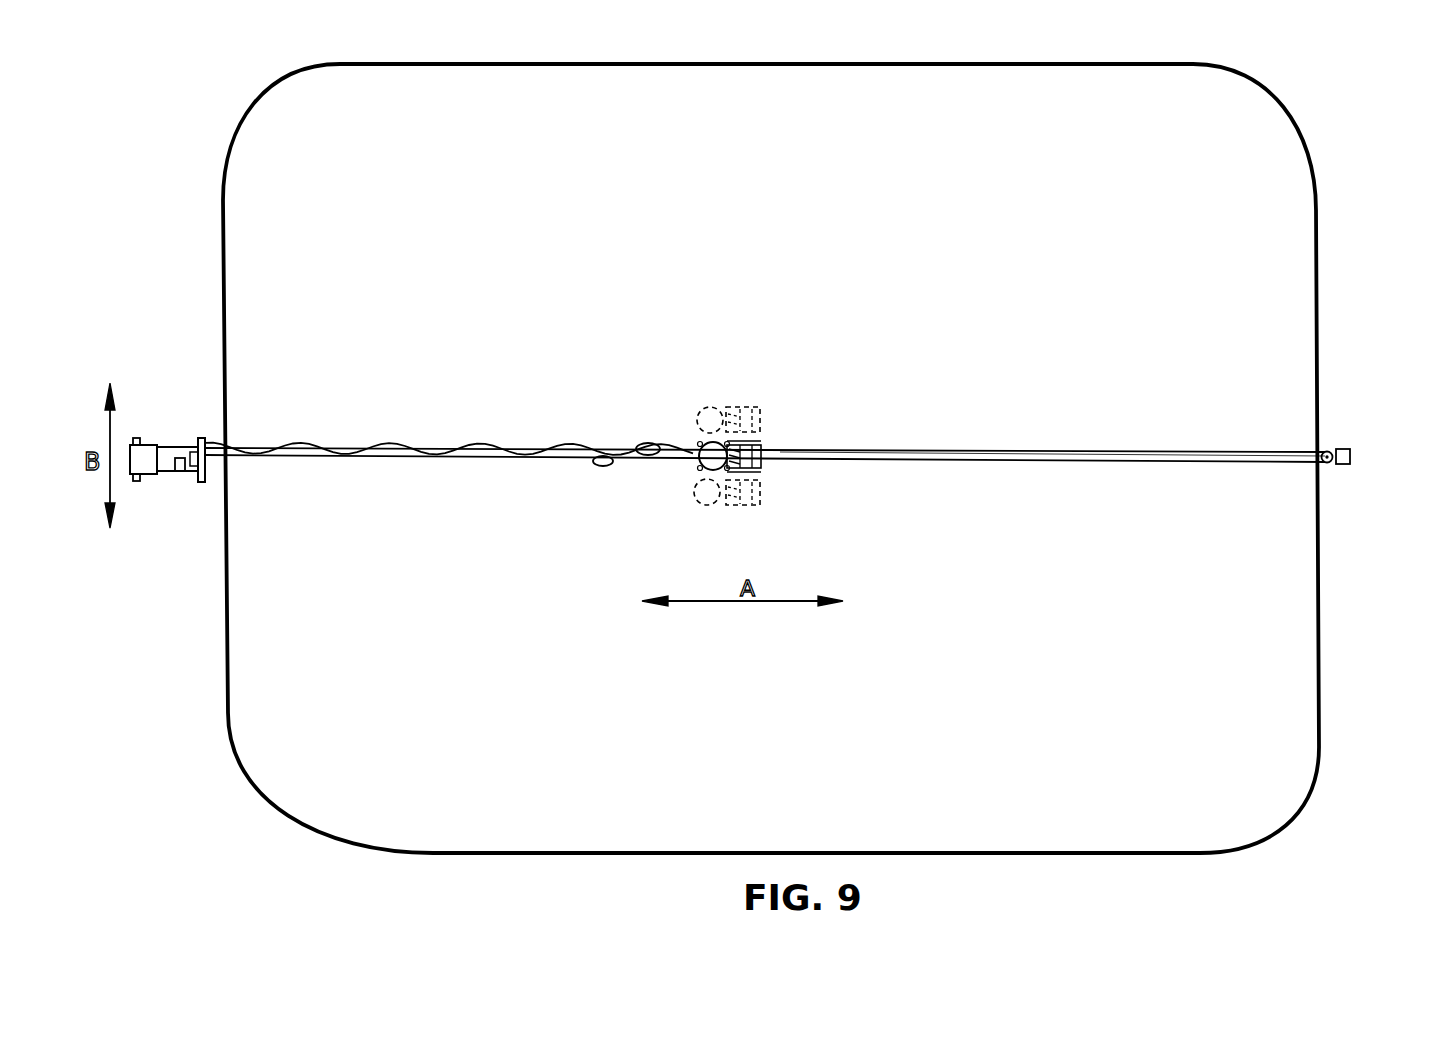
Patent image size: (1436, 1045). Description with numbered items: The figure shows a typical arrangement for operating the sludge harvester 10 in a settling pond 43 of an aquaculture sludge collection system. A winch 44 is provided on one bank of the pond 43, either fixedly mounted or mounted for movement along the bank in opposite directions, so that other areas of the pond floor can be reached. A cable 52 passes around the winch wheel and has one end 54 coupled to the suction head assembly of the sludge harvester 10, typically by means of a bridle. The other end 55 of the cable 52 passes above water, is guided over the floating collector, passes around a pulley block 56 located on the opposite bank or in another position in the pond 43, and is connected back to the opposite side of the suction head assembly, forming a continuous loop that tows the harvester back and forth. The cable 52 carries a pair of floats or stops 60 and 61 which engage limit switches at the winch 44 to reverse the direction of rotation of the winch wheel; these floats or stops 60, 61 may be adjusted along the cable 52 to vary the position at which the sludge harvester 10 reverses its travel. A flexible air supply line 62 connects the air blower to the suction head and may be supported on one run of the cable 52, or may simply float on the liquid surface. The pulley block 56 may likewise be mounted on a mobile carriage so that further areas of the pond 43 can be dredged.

The settling pond 43 is at (1292, 106).
The winch 44 is at (180, 428).
The cable 52 is at (1043, 437).
The one end of the cable 54 is at (683, 470).
The other end of the cable 55 is at (812, 462).
The pulley block 56 is at (1348, 436).
The float or stop 60 is at (651, 443).
The float or stop 61 is at (603, 466).
The flexible air supply line 62 is at (485, 440).
The sludge harvester 10 is at (751, 393).